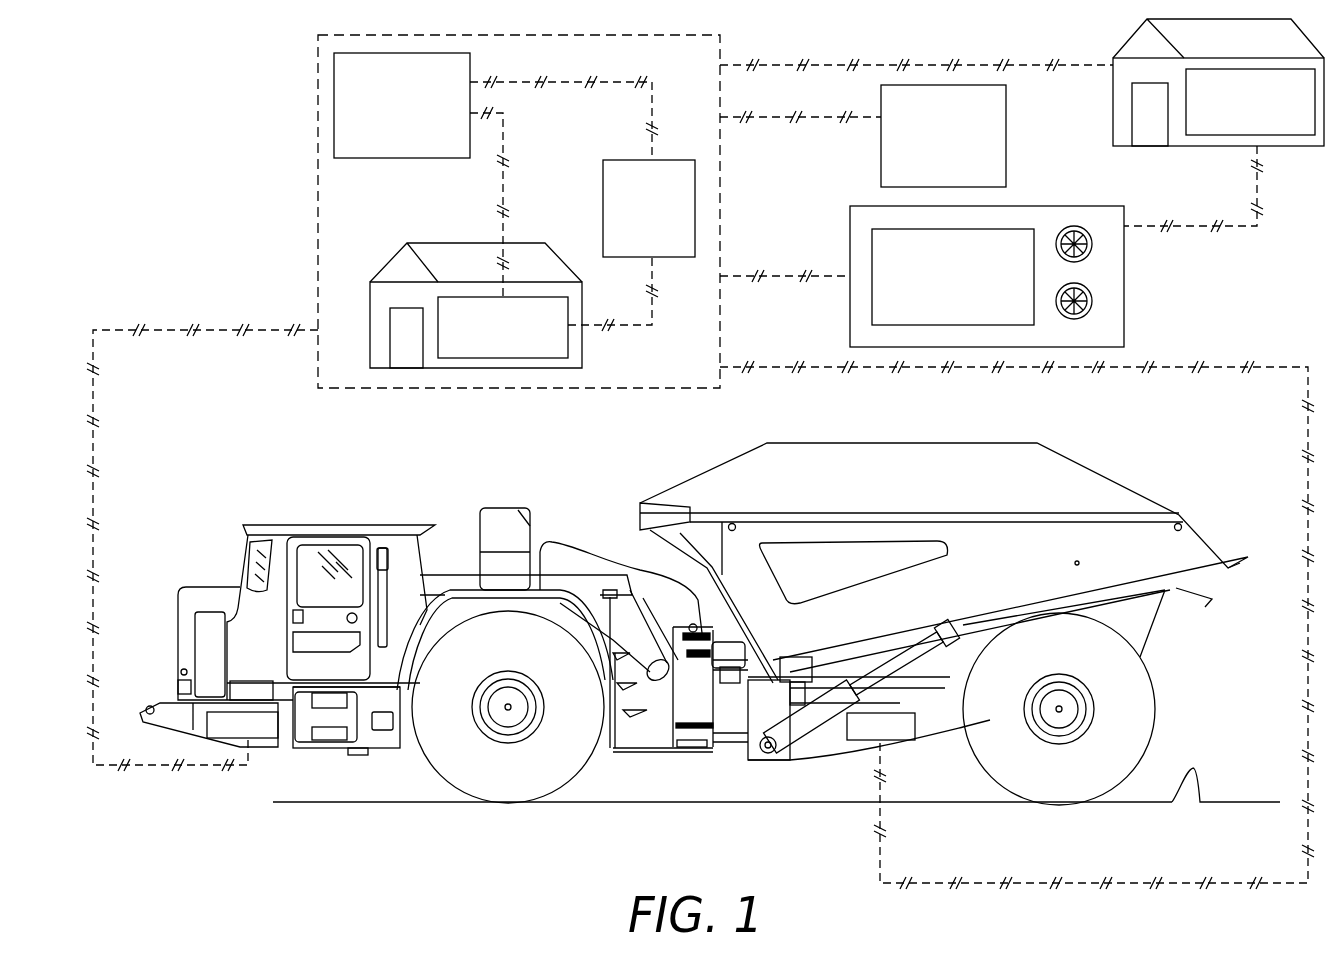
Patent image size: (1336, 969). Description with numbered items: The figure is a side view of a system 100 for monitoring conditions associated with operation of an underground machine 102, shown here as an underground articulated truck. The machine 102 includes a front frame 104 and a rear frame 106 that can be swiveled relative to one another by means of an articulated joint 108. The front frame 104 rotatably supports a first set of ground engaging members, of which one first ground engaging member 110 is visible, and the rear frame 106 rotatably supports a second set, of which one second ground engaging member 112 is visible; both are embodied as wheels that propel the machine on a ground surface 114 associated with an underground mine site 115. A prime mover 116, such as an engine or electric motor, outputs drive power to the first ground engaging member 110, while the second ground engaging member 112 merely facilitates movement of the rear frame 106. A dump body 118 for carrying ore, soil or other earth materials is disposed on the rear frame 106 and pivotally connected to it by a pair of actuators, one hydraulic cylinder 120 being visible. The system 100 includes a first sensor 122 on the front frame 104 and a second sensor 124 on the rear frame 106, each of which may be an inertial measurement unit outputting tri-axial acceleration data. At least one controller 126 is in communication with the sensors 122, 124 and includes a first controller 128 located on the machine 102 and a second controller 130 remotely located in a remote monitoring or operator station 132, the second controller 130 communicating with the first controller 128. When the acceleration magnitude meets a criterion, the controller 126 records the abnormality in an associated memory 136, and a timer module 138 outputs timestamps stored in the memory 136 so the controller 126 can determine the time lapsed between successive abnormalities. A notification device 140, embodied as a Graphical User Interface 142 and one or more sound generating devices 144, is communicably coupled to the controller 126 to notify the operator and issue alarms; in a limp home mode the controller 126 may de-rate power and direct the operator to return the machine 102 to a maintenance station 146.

The system 100 is at (172, 167).
The machine 102 is at (229, 551).
The front frame 104 is at (287, 720).
The rear frame 106 is at (810, 748).
The articulated joint 108 is at (702, 627).
The first ground engaging member 110 is at (522, 778).
The second ground engaging member 112 is at (1064, 779).
The ground surface 114 is at (1194, 770).
The underground mine site 115 is at (1233, 770).
The prime mover 116 is at (607, 750).
The dump body 118 is at (1192, 541).
The hydraulic cylinder 120 is at (902, 660).
The first sensor 122 is at (705, 815).
The second sensor 124 is at (872, 740).
The controller 126 is at (318, 65).
The first controller 128 is at (402, 105).
The second controller 130 is at (503, 327).
The remote monitoring or operator station 132 is at (445, 243).
The memory 136 is at (943, 136).
The timer module 138 is at (649, 208).
The notification device 140 is at (1055, 206).
The Graphical User Interface 142 is at (953, 277).
The sound generating device 144 is at (1092, 244).
The maintenance station 146 is at (1218, 82).